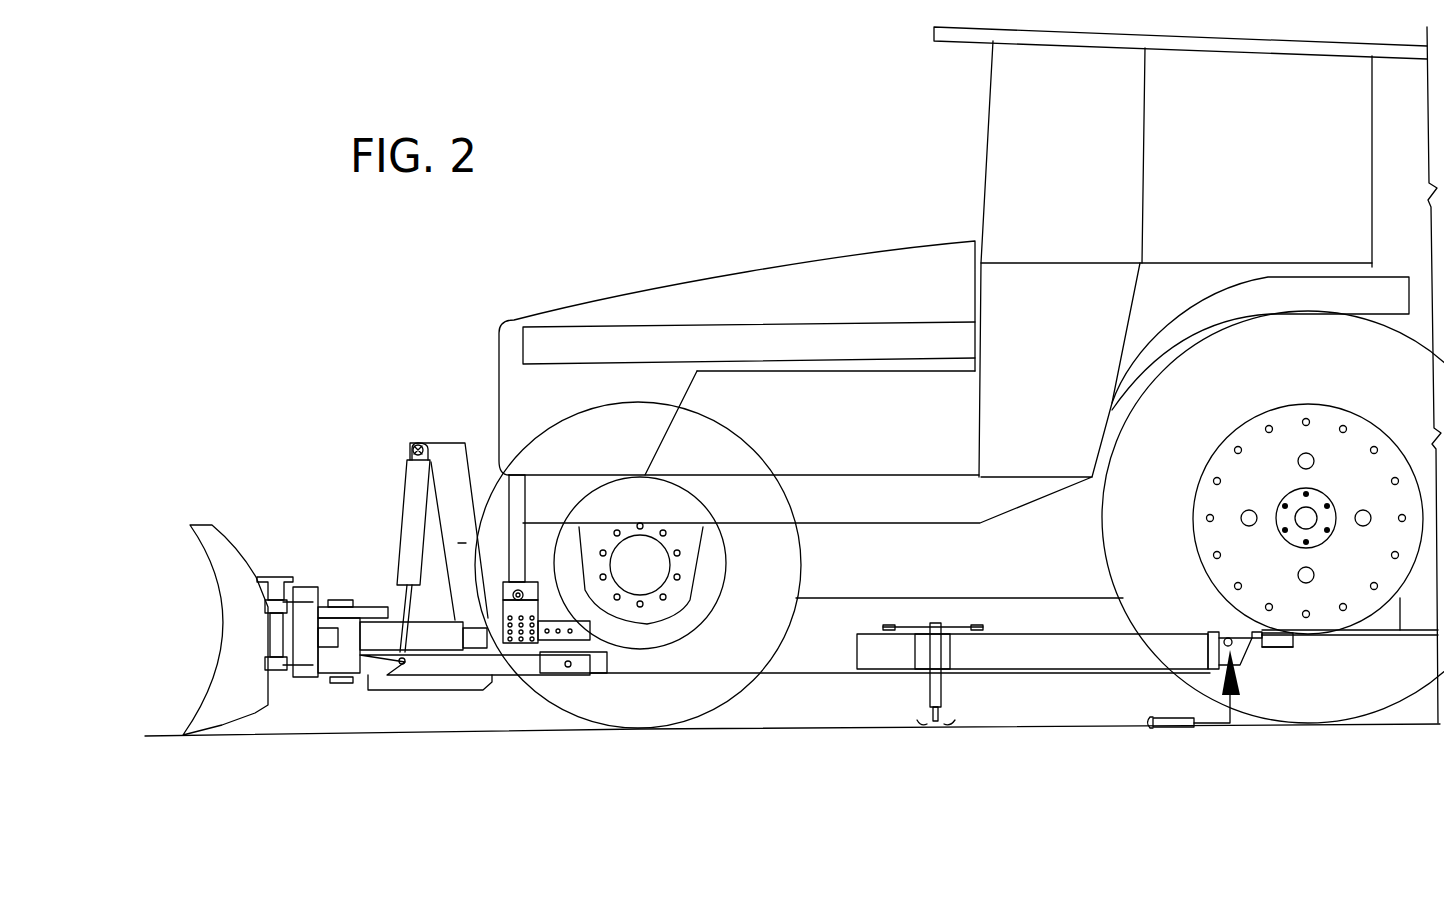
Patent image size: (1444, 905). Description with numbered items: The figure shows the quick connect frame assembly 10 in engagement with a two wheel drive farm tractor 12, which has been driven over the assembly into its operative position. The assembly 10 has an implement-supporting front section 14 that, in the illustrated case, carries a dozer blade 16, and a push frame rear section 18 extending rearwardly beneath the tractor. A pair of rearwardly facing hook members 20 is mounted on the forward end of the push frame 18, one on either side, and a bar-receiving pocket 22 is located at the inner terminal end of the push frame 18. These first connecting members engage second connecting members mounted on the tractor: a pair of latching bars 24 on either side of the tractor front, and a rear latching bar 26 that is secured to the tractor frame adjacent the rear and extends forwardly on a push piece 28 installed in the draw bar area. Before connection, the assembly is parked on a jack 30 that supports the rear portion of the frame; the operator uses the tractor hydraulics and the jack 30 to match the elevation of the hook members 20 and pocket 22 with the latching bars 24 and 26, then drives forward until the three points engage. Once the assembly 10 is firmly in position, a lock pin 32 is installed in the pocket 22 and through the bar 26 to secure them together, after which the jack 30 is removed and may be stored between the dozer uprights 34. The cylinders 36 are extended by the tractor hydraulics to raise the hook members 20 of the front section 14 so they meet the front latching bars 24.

The quick connect frame assembly 10 is at (352, 418).
The tractor 12 is at (905, 232).
The implement-supporting front section 14 is at (312, 576).
The dozer blade 16 is at (215, 533).
The push frame rear section 18 is at (1048, 645).
The hook members 20 is at (533, 640).
The bar-receiving pocket 22 is at (1235, 648).
The latching bars 24 is at (523, 597).
The rear latching bar 26 is at (1248, 637).
The push piece 28 is at (1383, 637).
The jack 30 is at (933, 695).
The lock pin 32 is at (1170, 720).
The dozer uprights 34 is at (462, 482).
The cylinders 36 is at (417, 482).